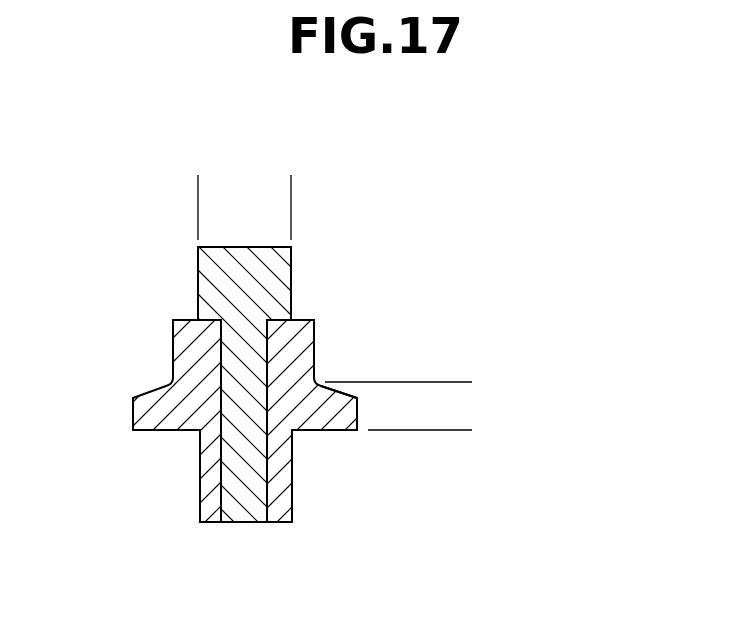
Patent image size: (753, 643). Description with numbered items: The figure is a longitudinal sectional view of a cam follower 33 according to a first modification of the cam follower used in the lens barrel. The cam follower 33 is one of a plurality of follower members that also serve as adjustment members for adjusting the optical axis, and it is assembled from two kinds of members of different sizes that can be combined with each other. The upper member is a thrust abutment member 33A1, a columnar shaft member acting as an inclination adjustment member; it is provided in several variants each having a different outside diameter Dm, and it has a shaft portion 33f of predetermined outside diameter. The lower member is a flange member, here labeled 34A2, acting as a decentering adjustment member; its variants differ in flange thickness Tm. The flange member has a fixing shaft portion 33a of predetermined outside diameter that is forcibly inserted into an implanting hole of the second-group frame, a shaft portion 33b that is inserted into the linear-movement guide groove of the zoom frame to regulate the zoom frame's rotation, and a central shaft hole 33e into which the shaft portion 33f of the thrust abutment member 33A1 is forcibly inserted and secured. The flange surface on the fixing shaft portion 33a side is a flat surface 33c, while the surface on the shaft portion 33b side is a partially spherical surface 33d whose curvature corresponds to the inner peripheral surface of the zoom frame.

The cam follower 33 is at (368, 410).
The fixing shaft portion 33a is at (200, 490).
The shaft portion 33b is at (316, 340).
The flat surface 33c is at (145, 432).
The partially spherical surface 33d is at (325, 382).
The shaft hole 33e is at (262, 484).
The shaft portion 33f is at (279, 505).
The thrust abutment member 33A1 is at (296, 267).
The flange portions 34A2, 34B2, 34C2, 34D2 34A2 is at (368, 414).
The outside diameter Dm is at (279, 192).
The flange thickness Tm is at (462, 342).